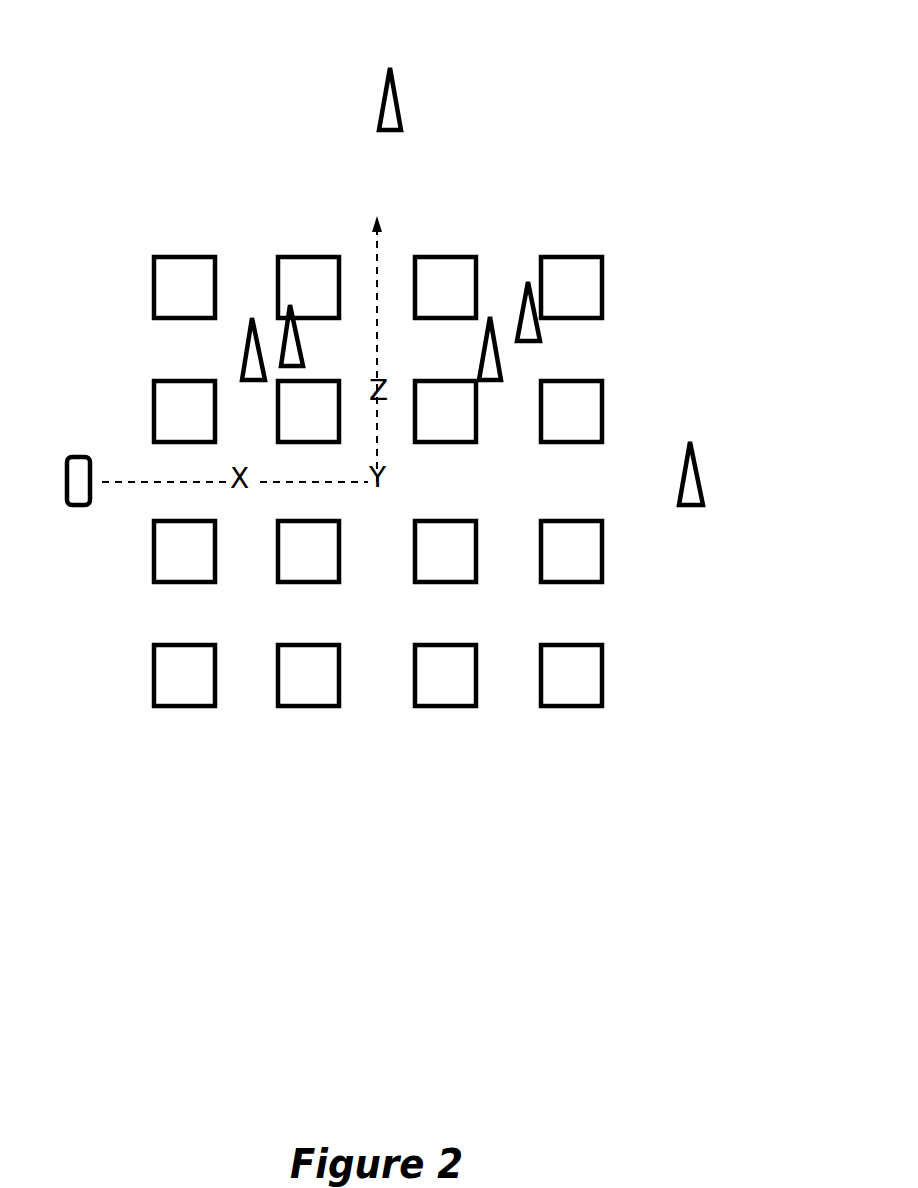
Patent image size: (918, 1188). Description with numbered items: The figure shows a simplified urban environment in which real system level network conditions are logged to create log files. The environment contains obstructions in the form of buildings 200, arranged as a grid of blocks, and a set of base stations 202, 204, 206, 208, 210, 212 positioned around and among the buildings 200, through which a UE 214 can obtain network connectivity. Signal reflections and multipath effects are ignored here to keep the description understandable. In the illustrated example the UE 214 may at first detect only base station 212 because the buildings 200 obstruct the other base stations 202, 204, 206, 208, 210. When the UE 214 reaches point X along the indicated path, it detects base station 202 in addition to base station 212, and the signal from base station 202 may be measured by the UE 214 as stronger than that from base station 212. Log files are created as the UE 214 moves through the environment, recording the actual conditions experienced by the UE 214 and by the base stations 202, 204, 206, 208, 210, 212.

The buildings 200 is at (378, 481).
The base station 202 is at (243, 355).
The base station 204 is at (280, 330).
The base station 206 is at (382, 97).
The base station 208 is at (490, 317).
The base station 210 is at (528, 282).
The base station 212 is at (695, 455).
The UE 214 is at (65, 505).